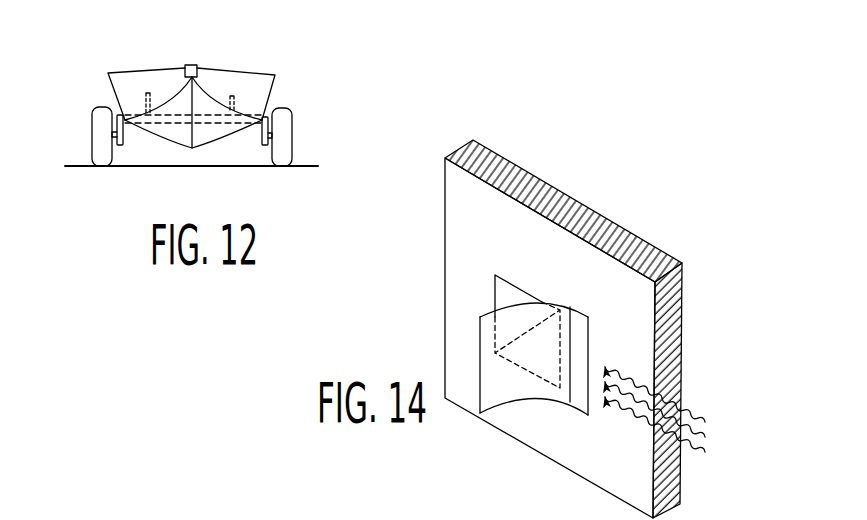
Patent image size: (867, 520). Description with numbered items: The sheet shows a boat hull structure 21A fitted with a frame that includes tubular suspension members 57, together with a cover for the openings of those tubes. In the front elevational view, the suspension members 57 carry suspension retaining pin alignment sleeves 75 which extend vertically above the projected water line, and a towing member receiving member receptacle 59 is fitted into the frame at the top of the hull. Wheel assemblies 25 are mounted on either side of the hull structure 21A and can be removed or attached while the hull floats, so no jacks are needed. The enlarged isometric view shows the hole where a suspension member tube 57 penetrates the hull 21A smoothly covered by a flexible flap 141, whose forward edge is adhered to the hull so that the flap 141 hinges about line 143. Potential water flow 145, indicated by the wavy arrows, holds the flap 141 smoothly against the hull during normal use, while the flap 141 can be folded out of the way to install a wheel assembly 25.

In FIG. 12, the boat hull structure 21A is at (252, 92).
In FIG. 14, the boat hull structure 21A is at (518, 329).
In FIG. 12, the wheel assembly 25 is at (85, 127).
In FIG. 12, the suspension member 57 is at (229, 147).
In FIG. 14, the suspension member 57 is at (532, 318).
In FIG. 12, the towing member receiving member receptacle 59 is at (226, 46).
In FIG. 12, the suspension retaining pin alignment sleeve 75 is at (172, 50).
In FIG. 14, the flexible flap 141 is at (534, 372).
In FIG. 14, the hinge line 143 is at (608, 333).
In FIG. 14, the water flow 145 is at (674, 411).